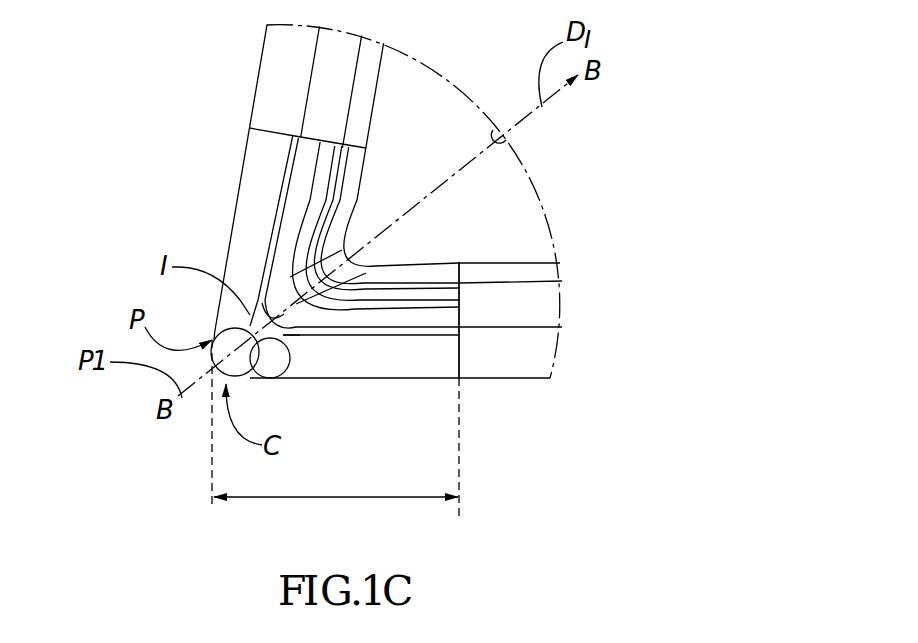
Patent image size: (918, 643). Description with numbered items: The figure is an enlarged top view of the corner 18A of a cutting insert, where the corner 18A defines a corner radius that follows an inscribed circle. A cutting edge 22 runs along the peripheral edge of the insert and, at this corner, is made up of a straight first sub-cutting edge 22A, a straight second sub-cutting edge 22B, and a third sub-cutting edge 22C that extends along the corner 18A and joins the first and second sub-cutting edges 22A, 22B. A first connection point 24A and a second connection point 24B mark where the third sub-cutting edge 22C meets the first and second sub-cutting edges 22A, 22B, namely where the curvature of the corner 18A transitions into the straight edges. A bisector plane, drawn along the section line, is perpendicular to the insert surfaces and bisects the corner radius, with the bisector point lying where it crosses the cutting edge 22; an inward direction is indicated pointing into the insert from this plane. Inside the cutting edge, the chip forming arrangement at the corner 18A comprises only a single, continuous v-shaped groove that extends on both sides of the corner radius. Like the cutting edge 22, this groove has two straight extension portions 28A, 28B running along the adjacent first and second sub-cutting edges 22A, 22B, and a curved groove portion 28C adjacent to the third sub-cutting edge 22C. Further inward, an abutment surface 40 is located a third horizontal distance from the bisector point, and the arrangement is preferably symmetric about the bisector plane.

The cutting edge 22 is at (322, 281).
The second sub-cutting edge 22B is at (237, 186).
The first sub-cutting edge 22A is at (370, 384).
The third sub-cutting edge 22C is at (241, 382).
The straight extension portion 28B is at (266, 205).
The straight extension portion 28A is at (422, 348).
The curved groove portion 28C is at (297, 318).
The second connection point 24B is at (224, 331).
The first connection point 24A is at (267, 350).
The corner 18A is at (212, 333).
The abutment surface 40 is at (437, 149).